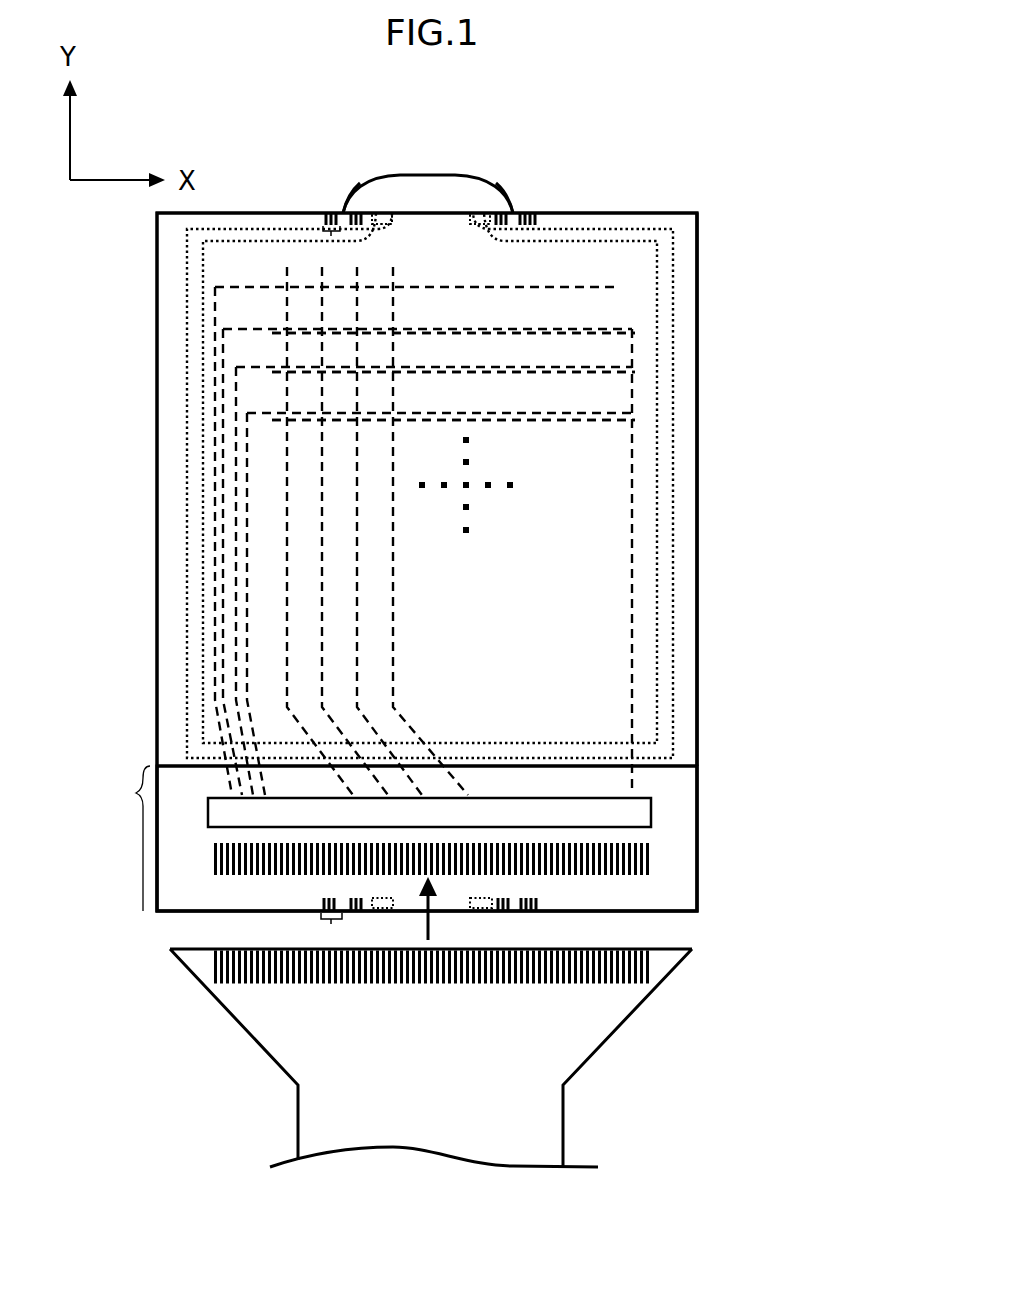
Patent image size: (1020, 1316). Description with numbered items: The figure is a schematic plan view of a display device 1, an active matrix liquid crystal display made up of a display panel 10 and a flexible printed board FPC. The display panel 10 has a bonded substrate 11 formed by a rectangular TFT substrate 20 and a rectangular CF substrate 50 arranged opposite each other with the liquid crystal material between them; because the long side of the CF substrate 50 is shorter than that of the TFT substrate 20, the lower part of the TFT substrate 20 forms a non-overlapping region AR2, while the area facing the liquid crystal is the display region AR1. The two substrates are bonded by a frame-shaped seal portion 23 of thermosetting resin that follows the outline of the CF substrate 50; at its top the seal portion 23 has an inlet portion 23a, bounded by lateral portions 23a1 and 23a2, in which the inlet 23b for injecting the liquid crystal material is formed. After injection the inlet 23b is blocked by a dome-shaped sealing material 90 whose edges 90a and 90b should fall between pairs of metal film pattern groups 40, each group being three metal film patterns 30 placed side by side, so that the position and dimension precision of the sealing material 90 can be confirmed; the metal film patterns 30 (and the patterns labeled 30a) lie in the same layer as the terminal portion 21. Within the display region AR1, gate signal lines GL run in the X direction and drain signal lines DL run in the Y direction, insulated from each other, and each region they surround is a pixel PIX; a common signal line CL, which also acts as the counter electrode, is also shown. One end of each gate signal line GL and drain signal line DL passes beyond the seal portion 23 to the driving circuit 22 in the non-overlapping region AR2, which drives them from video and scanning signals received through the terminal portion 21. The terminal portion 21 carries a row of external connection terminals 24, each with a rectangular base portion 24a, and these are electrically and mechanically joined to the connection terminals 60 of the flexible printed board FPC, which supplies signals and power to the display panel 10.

The display device 1 is at (439, 137).
The display panel 10 is at (719, 206).
The bonded substrate 11 is at (701, 656).
The TFT substrate 20 is at (701, 880).
The terminal portion 21 is at (206, 857).
The driving circuit 22 is at (208, 804).
The seal portion 23 is at (669, 268).
The inlet portion 23a is at (489, 211).
The lateral portion of inlet portion 23a1 is at (378, 213).
The lateral portion of inlet portion 23a2 is at (478, 222).
The inlet 23b is at (445, 212).
The external connection terminal 24 is at (700, 873).
The base portion 24a is at (653, 857).
The metal film pattern 30 is at (555, 217).
The terminal pads 30a is at (333, 211).
The metal film pattern group 40 is at (334, 589).
The CF substrate 50 is at (653, 768).
The connection terminal 60 is at (648, 966).
The sealing material 90 is at (400, 183).
The edge of sealing material 90a is at (369, 212).
The edge of sealing material 90b is at (514, 213).
The gate signal line GL is at (568, 325).
The common signal line CL is at (553, 376).
The drain signal line DL is at (393, 680).
The pixel PIX is at (335, 296).
The display region AR1 is at (580, 578).
The non-overlapping region AR2 is at (114, 838).
The flexible printed board FPC is at (247, 1057).